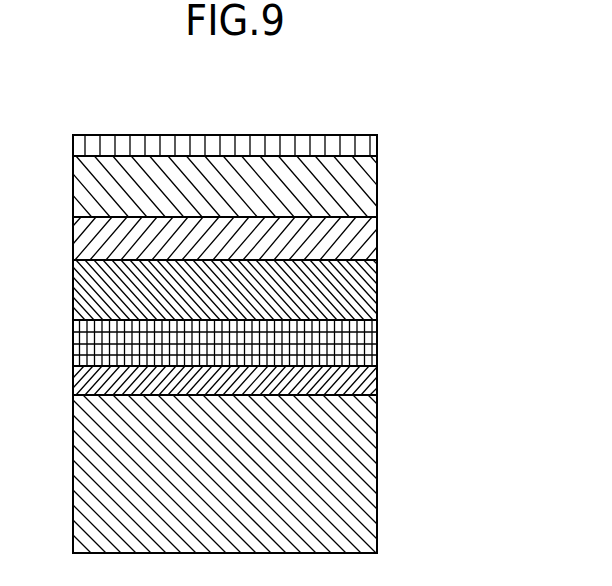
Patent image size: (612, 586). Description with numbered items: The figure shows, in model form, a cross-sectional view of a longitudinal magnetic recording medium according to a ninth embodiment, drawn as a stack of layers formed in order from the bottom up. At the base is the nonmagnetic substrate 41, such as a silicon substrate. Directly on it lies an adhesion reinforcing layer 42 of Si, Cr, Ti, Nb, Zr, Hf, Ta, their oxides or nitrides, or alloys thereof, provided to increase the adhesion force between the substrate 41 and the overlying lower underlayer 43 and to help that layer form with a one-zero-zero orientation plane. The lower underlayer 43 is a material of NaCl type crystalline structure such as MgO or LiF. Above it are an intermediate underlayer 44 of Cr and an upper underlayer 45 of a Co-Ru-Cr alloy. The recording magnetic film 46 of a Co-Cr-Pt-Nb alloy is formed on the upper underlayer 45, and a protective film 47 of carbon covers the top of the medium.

The nonmagnetic substrate 41 is at (367, 462).
The adhesion reinforcing layer 42 is at (367, 382).
The lower underlayer 43 is at (367, 340).
The intermediate underlayer 44 is at (367, 292).
The upper underlayer 45 is at (367, 240).
The recording magnetic film 46 is at (372, 183).
The protective film 47 is at (372, 143).